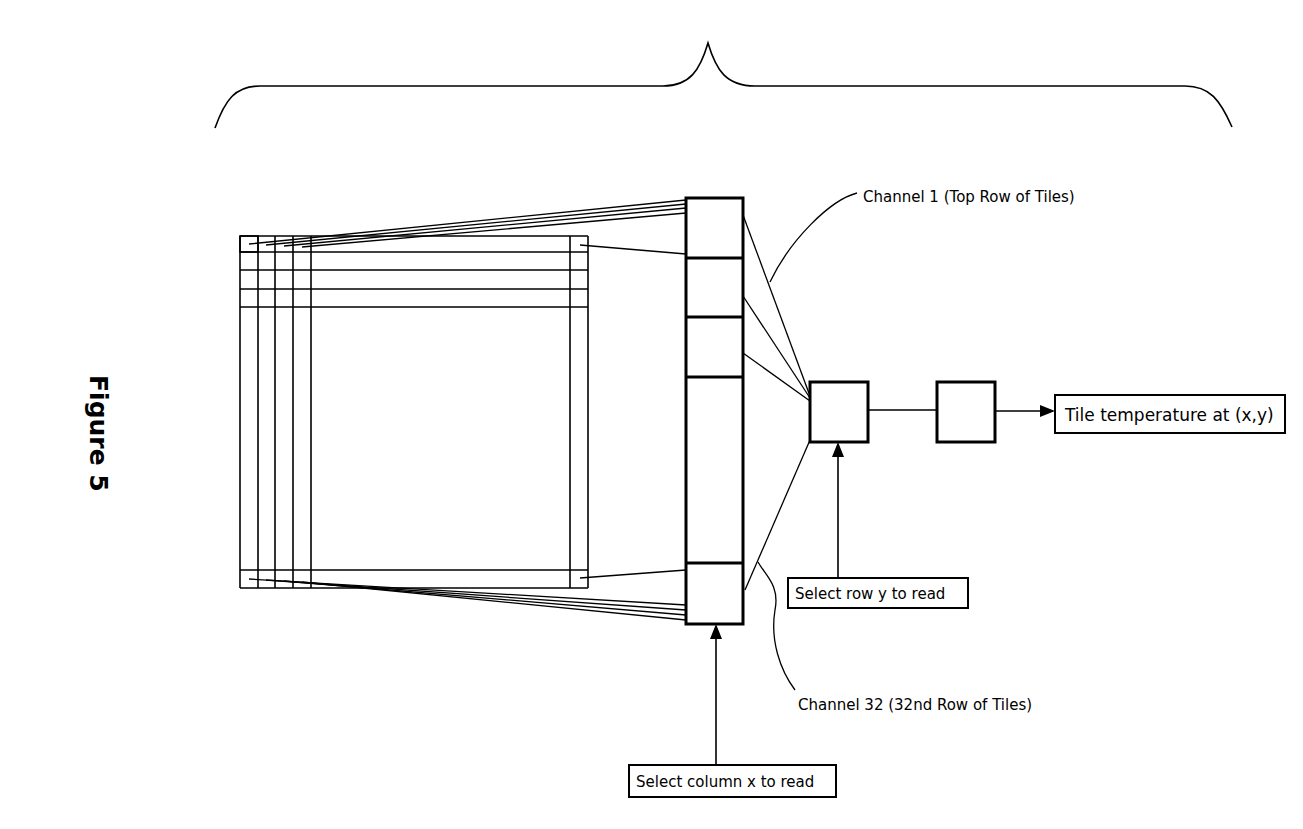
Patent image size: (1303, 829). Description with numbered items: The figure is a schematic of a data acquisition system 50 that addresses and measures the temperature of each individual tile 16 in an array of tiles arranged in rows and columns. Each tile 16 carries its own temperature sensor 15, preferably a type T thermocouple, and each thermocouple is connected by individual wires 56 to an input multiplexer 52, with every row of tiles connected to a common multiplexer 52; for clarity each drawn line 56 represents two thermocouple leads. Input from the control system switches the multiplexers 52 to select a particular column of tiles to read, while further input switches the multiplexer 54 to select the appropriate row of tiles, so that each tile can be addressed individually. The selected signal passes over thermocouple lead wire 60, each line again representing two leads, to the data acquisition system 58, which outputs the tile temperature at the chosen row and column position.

The temperature sensor 15 is at (255, 242).
The tile 16 is at (240, 236).
The data acquisition system 50 is at (723, 72).
The input multiplexer 52 is at (712, 275).
The multiplexer 54 is at (833, 382).
The individual wire 56 is at (568, 213).
The data acquisition system 58 is at (968, 382).
The thermocouple lead wire 60 is at (788, 332).